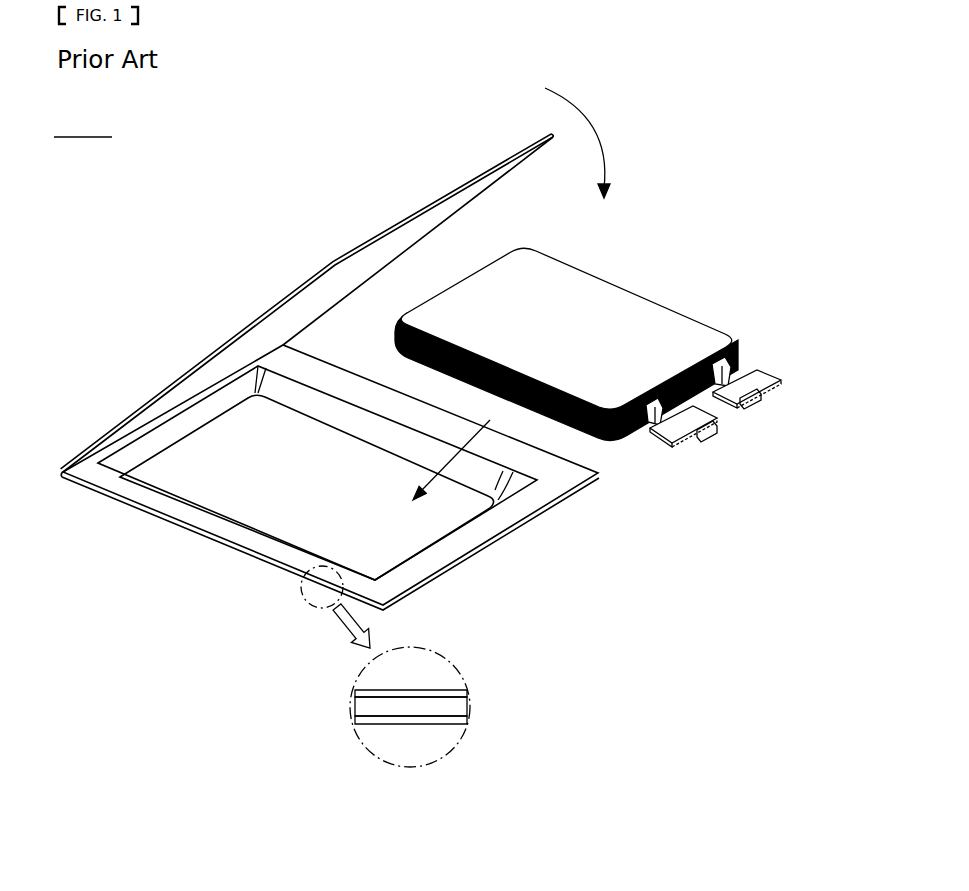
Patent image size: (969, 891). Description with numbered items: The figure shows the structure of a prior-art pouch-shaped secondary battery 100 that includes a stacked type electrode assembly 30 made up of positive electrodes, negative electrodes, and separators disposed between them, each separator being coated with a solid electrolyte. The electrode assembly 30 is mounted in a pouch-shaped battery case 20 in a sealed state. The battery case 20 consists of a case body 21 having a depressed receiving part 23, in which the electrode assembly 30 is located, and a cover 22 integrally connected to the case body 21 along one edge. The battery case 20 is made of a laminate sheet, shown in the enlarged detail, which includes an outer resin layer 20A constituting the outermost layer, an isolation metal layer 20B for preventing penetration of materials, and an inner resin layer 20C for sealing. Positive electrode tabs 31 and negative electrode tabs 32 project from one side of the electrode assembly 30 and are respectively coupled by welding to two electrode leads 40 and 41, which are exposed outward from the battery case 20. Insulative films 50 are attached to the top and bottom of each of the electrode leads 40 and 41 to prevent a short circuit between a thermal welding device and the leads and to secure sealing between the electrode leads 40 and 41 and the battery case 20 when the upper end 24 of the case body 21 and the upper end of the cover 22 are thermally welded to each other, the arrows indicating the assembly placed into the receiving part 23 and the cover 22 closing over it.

The battery pack 100 is at (83, 121).
The pouch-shaped battery case 20 is at (158, 347).
The case body 21 is at (250, 550).
The cover 22 is at (360, 252).
The depressed receiving part 23 is at (200, 488).
The upper end of the case body 24 is at (467, 542).
The outer resin layer 20A is at (452, 723).
The isolation metal layer 20B is at (460, 707).
The inner resin layer 20C is at (453, 693).
The electrode assembly 30 is at (643, 312).
The positive electrode tab 31 is at (740, 353).
The negative electrode tab 32 is at (650, 425).
The electrode lead 40 is at (780, 390).
The electrode lead 41 is at (700, 435).
The insulative film 50 is at (713, 441).